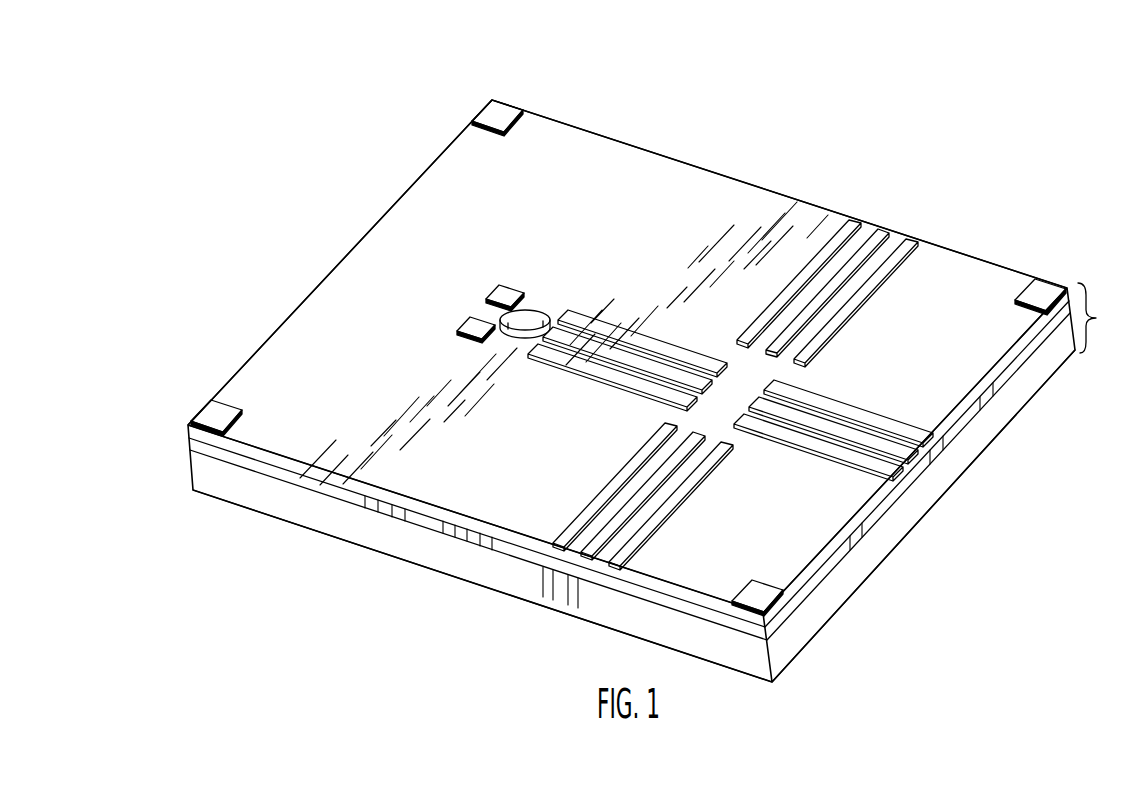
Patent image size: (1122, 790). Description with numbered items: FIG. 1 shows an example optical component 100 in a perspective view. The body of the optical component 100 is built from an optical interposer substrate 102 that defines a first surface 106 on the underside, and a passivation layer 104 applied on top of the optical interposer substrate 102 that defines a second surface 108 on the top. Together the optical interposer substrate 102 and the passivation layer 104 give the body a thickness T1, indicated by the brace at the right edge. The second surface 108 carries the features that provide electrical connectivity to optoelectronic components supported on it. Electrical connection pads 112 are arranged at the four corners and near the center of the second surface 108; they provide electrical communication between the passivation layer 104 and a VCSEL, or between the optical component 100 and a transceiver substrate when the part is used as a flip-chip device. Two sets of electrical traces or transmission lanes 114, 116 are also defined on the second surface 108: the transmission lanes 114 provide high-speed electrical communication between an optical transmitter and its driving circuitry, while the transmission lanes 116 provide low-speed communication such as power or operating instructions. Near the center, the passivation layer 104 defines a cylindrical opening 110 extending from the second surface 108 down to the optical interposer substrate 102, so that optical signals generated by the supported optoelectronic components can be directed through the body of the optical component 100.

The optical component 100 is at (259, 80).
The optical interposer substrate 102 is at (857, 577).
The passivation layer 104 is at (258, 346).
The first surface 106 is at (536, 606).
The second surface 108 is at (344, 300).
The opening 110 is at (526, 308).
The electrical connection pads 112 is at (478, 326).
The transmission lanes 114 is at (642, 362).
The transmission lanes 116 is at (848, 266).
The thickness T1 is at (1098, 318).